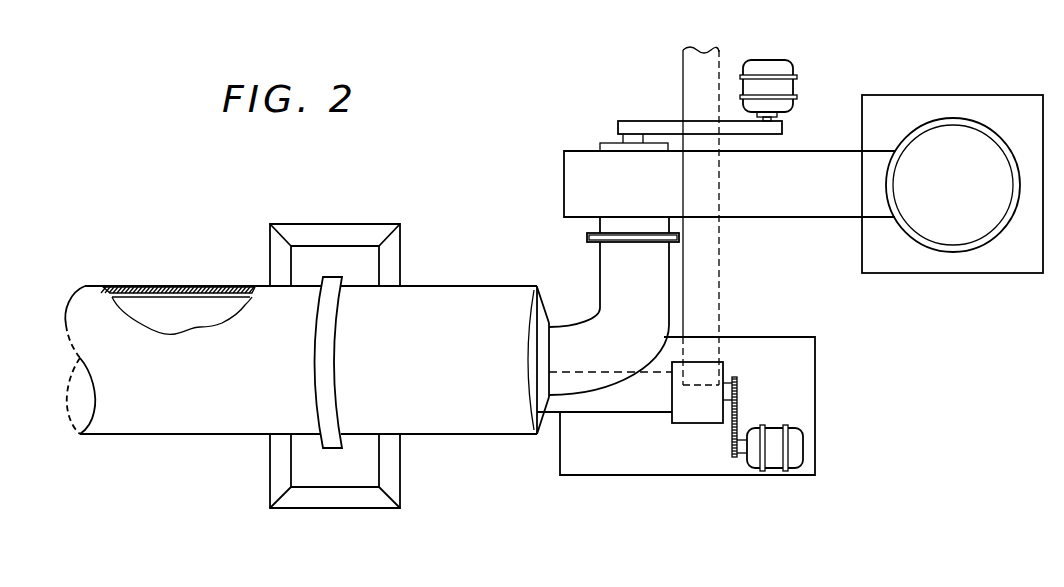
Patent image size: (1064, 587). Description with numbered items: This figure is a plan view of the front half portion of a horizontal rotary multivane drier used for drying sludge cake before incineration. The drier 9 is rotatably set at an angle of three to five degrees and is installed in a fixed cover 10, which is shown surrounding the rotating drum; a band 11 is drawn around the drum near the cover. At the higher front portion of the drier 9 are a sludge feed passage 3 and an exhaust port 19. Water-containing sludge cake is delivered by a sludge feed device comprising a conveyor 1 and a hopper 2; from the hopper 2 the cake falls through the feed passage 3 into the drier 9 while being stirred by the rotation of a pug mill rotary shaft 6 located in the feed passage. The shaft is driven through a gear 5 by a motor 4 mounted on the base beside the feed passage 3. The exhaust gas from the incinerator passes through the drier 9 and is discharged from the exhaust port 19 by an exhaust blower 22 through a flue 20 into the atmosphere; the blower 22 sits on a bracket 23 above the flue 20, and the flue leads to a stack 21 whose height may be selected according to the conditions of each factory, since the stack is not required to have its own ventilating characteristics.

The conveyor 1 is at (714, 67).
The hopper 2 is at (678, 425).
The sludge feed passage 3 is at (618, 408).
The motor 4 is at (775, 458).
The gear wheel 5 is at (729, 436).
The pug mill rotary shaft 6 is at (731, 377).
The drier 9 is at (143, 303).
The fixed cover 10 is at (197, 286).
The band 11 is at (335, 398).
The exhaust port 19 is at (600, 308).
The flue 20 is at (794, 214).
The stack 21 is at (963, 248).
The exhaust blower 22 is at (794, 87).
The bracket 23 is at (600, 148).